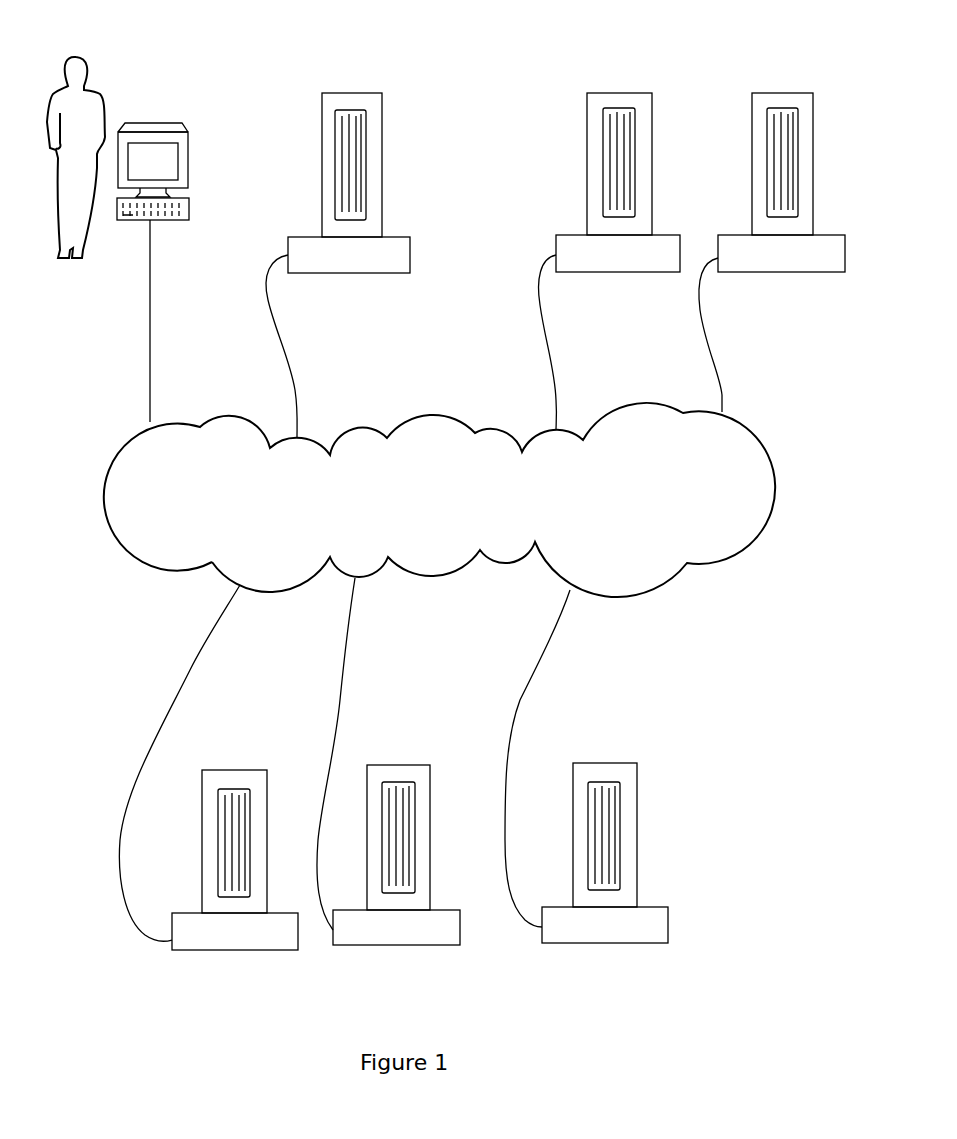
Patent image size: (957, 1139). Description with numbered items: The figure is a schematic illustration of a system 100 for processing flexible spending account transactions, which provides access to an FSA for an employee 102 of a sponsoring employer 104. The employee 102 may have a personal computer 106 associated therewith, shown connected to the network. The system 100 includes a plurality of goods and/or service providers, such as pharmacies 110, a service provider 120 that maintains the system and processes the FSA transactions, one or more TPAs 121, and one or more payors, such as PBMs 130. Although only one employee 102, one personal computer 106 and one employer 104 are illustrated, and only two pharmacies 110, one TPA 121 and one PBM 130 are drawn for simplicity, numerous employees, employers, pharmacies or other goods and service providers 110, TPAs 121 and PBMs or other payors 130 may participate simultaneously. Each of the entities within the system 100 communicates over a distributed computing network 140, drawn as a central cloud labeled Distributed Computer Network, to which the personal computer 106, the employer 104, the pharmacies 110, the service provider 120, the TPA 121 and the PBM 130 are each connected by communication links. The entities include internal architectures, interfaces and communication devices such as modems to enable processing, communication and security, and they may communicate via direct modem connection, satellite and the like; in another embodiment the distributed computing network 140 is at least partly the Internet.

The system 100 is at (710, 633).
The employee 102 is at (49, 66).
The sponsoring employer 104 is at (382, 112).
The personal computer 106 is at (150, 123).
The pharmacies 110 is at (652, 110).
The service provider 120 is at (267, 790).
The TPA 121 is at (430, 790).
The PBM 130 is at (637, 785).
The distributed computing network 140 is at (777, 490).